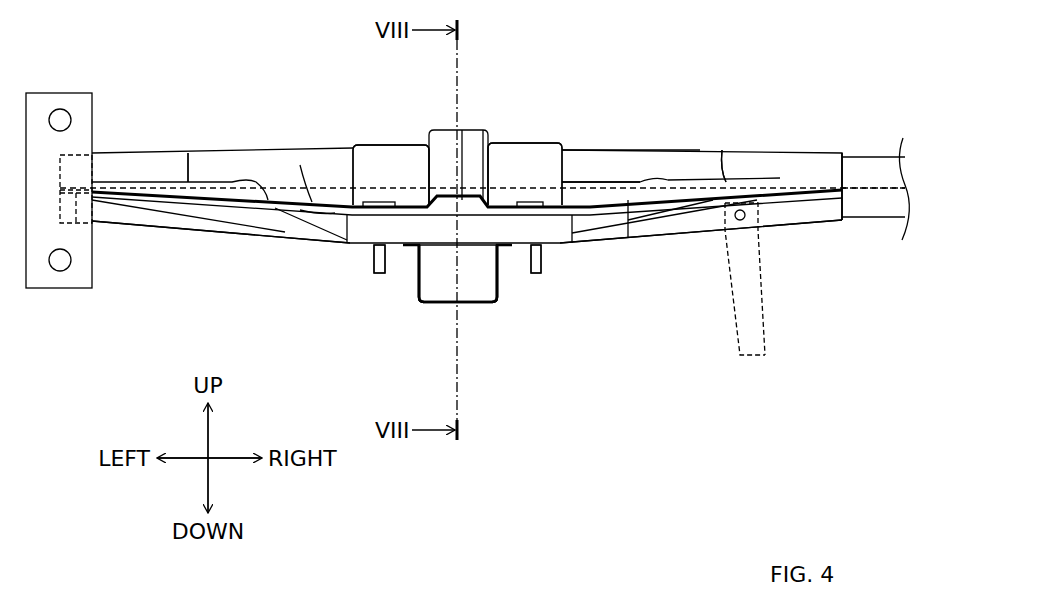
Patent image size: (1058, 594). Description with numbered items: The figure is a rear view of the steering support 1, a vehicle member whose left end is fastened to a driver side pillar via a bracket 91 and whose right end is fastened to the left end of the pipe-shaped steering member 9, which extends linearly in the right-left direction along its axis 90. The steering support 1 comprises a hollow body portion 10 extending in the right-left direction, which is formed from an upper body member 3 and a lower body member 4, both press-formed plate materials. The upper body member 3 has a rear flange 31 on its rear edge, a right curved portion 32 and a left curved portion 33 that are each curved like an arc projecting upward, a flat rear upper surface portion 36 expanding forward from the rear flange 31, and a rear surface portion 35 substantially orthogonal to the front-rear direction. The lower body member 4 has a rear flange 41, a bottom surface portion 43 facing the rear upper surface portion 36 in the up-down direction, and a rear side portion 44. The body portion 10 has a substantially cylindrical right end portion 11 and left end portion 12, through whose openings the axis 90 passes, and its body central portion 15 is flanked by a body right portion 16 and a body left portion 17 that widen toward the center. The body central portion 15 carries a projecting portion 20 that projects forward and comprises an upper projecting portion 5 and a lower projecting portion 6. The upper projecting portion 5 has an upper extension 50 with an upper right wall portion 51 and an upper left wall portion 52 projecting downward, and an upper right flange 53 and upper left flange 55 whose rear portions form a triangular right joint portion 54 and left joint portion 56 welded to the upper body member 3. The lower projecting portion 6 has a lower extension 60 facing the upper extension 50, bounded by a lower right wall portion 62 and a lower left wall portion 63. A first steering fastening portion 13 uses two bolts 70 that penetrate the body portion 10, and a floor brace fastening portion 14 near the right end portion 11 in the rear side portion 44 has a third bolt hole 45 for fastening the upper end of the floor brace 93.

The steering support 1 is at (774, 50).
The upper body member 3 is at (296, 70).
The lower body member 4 is at (248, 282).
The upper projecting portion 5 is at (472, 55).
The lower projecting portion 6 is at (480, 340).
The steering member 9 is at (872, 205).
The body portion 10 is at (296, 70).
The right end portion 11 is at (830, 207).
The left end portion 12 is at (78, 222).
The first steering fastening portion 13 is at (378, 283).
The floor brace fastening portion 14 is at (770, 237).
The body central portion 15 is at (453, 237).
The body right portion 16 is at (675, 240).
The body left portion 17 is at (238, 247).
The projecting portion 20 is at (472, 55).
The rear flange 31 is at (312, 202).
The right curved portion 32 is at (708, 167).
The left curved portion 33 is at (255, 165).
The rear surface portion 35 is at (570, 163).
The rear upper surface portion 36 is at (568, 202).
The rear flange 41 is at (335, 213).
The bottom surface portion 43 is at (595, 238).
The rear side portion 44 is at (550, 227).
The third bolt hole 45 is at (737, 213).
The upper extension 50 is at (463, 160).
The upper right wall portion 51 is at (483, 150).
The upper left wall portion 52 is at (430, 163).
The upper right flange 53 is at (525, 174).
The right joint portion 54 is at (547, 165).
The upper left flange 55 is at (391, 175).
The left joint portion 56 is at (370, 177).
The lower extension 60 is at (452, 305).
The lower right wall portion 62 is at (498, 287).
The lower left wall portion 63 is at (417, 287).
The bolt 70 is at (376, 262).
The axis 90 is at (868, 185).
The bracket 91 is at (62, 92).
The floor brace 93 is at (780, 323).